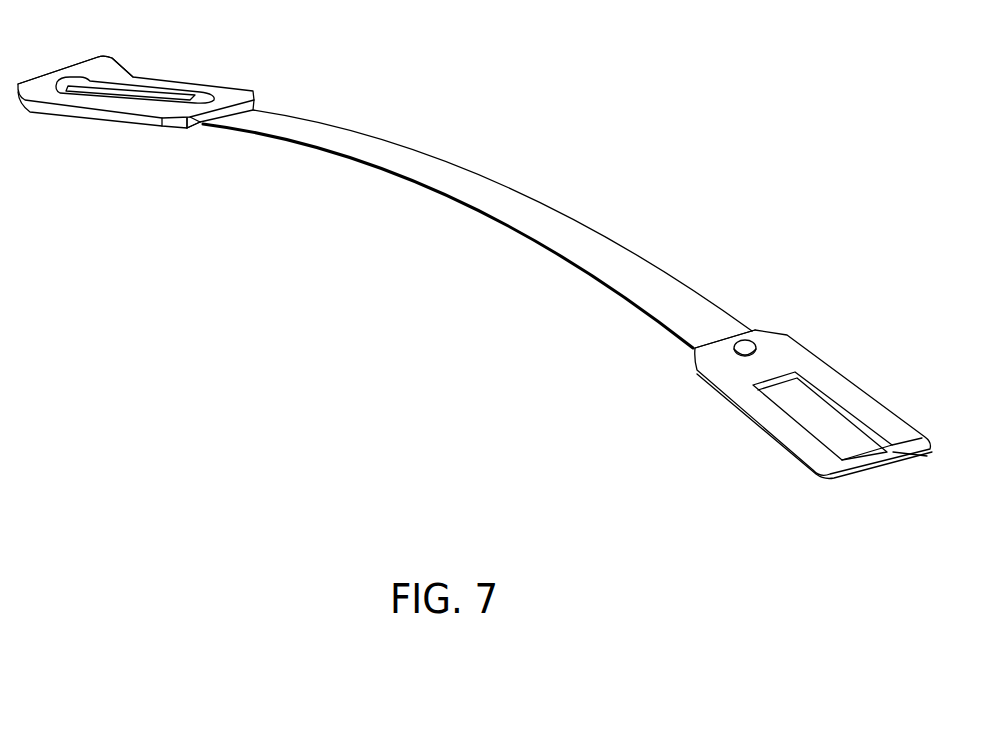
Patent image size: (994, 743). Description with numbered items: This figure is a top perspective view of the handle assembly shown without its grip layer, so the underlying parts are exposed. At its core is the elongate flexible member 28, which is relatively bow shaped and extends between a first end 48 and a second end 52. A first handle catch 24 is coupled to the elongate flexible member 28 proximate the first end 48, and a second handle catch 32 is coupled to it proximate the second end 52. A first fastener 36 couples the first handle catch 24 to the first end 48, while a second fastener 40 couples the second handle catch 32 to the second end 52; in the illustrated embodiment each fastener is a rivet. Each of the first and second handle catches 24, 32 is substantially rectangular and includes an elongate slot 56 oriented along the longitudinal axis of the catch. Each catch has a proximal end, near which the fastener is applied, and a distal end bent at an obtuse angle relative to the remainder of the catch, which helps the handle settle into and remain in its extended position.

The first handle catch 24 is at (68, 112).
The elongate flexible member 28 is at (467, 188).
The second handle catch 32 is at (838, 387).
The first fastener 36 is at (184, 113).
The second fastener 40 is at (751, 345).
The first end 48 is at (280, 88).
The second end 52 is at (750, 308).
The elongate slot 56 is at (140, 90).